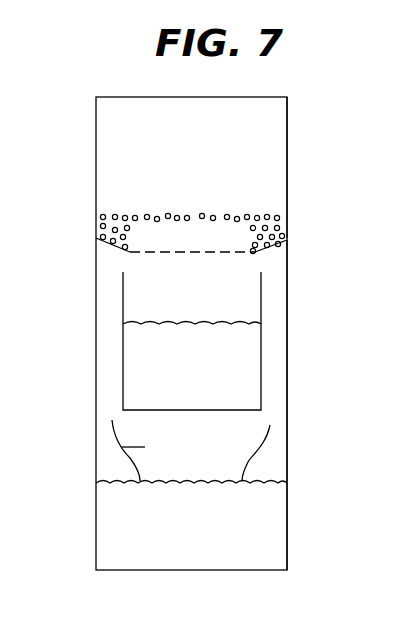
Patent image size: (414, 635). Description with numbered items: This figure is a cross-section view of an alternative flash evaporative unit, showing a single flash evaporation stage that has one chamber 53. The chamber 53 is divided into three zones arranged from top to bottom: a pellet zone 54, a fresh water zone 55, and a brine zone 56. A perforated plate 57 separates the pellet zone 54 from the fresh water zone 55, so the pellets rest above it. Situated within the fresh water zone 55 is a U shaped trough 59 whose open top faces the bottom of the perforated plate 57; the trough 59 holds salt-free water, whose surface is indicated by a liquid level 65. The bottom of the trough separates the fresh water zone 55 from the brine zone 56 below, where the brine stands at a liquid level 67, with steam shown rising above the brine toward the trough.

The chamber 53 is at (96, 373).
The pellet zone 54 is at (287, 176).
The fresh water zone 55 is at (287, 320).
The brine zone 56 is at (287, 459).
The perforated plate 57 is at (258, 252).
The U shaped trough 59 is at (261, 371).
The liquid level 65 is at (158, 323).
The liquid level 67 is at (117, 480).